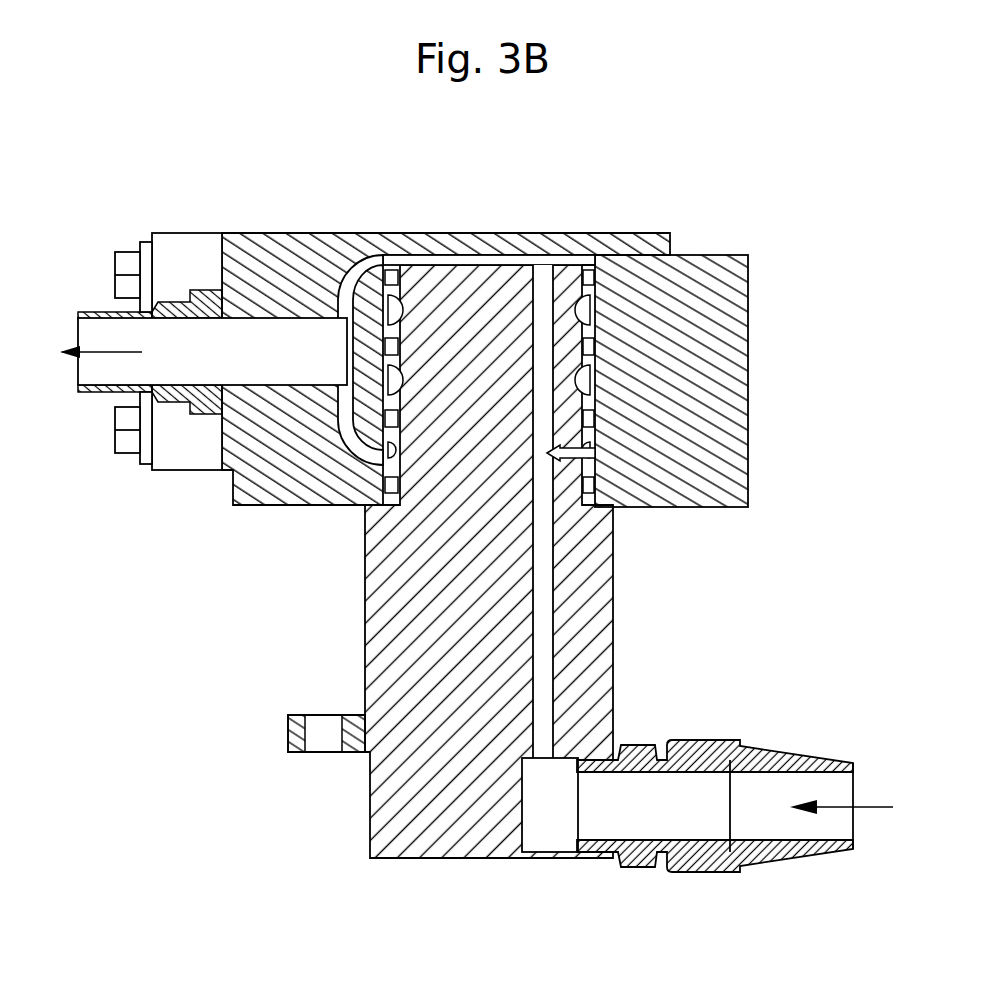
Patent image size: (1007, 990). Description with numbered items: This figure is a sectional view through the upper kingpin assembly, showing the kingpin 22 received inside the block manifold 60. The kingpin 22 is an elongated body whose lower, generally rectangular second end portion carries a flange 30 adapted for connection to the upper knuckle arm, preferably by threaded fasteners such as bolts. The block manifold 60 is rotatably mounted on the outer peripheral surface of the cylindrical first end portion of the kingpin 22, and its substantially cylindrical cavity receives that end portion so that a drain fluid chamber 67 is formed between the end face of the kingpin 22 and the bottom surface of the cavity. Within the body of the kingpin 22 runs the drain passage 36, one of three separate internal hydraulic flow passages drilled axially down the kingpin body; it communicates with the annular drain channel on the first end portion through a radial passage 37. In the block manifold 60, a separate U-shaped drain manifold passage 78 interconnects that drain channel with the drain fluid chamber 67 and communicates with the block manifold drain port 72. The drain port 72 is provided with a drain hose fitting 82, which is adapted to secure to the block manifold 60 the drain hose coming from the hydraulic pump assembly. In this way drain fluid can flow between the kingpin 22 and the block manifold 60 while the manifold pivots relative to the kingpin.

The kingpin 22 is at (624, 627).
The flange 30 is at (290, 716).
The drain passage 36 is at (545, 707).
The radial passage 37 is at (565, 455).
The block manifold 60 is at (760, 296).
The drain fluid chamber 67 is at (497, 262).
The block manifold drain port 72 is at (271, 340).
The drain manifold passage 78 is at (348, 290).
The drain hose fitting 82 is at (82, 312).